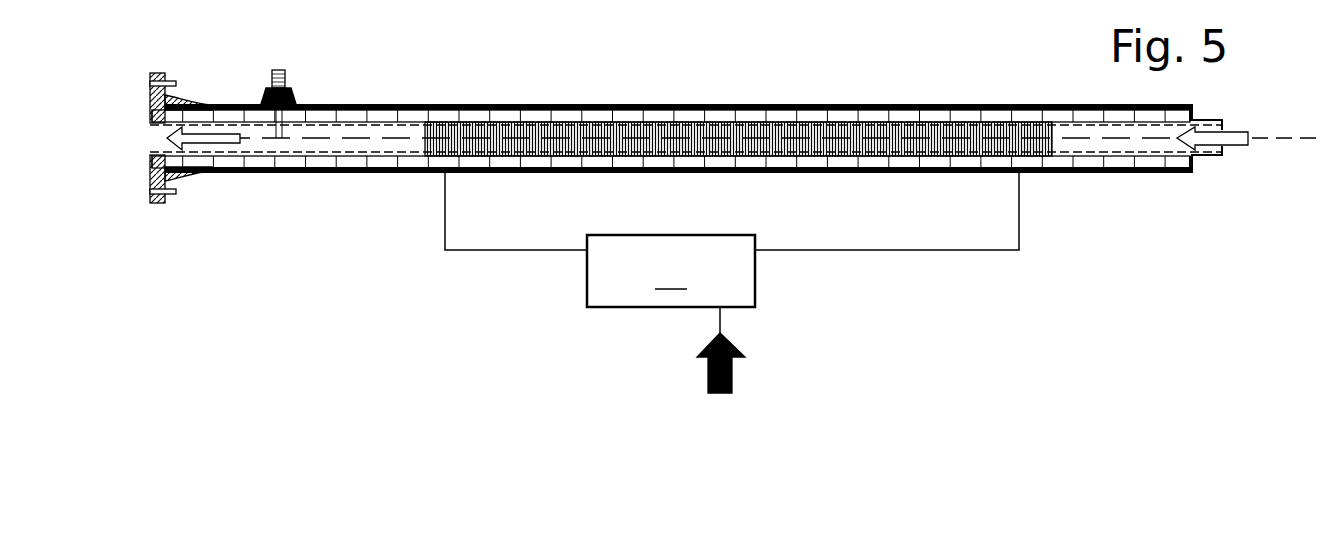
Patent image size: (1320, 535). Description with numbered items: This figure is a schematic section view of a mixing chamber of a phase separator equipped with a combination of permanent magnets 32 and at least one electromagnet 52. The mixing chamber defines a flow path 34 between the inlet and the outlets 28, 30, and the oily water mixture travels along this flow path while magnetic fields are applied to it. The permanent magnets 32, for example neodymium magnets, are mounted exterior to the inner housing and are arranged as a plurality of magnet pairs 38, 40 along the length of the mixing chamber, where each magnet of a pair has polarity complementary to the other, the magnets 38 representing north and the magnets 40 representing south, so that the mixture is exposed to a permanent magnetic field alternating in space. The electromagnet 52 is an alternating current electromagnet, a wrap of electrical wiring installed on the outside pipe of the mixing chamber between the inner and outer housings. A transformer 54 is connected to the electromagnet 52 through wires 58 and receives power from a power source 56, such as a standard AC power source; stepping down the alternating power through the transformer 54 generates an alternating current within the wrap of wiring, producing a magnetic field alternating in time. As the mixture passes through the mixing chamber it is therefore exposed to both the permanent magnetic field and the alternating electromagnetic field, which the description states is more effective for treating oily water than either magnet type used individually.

The outlet 28 is at (296, 96).
The outlet 30 is at (150, 128).
The permanent magnets 32 is at (478, 106).
The flow path 34 is at (1246, 142).
The magnet pair member 38 is at (657, 114).
The magnet pair member 40 is at (663, 168).
The electromagnet 52 is at (897, 115).
The transformer 54 is at (671, 271).
The power source 56 is at (740, 367).
The wires 58 is at (927, 251).